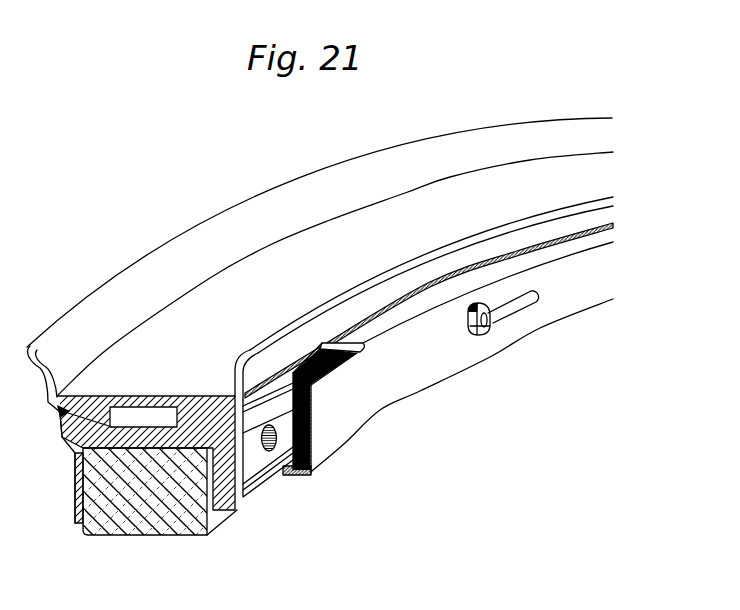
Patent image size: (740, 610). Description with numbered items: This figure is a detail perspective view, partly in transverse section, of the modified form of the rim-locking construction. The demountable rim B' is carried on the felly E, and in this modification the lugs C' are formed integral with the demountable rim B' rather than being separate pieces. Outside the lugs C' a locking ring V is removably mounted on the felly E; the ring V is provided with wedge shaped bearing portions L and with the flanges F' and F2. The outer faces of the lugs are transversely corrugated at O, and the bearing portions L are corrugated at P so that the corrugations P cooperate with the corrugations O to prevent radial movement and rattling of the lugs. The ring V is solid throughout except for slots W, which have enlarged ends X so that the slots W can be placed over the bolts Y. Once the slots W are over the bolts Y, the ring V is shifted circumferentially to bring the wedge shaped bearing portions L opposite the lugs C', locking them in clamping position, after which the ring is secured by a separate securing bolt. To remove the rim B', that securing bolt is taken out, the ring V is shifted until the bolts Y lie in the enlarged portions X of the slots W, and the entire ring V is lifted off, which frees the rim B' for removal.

The demountable rim B' is at (320, 326).
The flange F' is at (429, 310).
The flange F2 is at (292, 465).
The felly E is at (145, 503).
The lug C' is at (286, 456).
The corrugations O is at (238, 487).
The locking ring V is at (313, 420).
The wedge shaped bearing portion L is at (316, 358).
The corrugations P is at (313, 455).
The enlarged end X is at (470, 304).
The slot W is at (519, 304).
The bolt Y is at (482, 336).